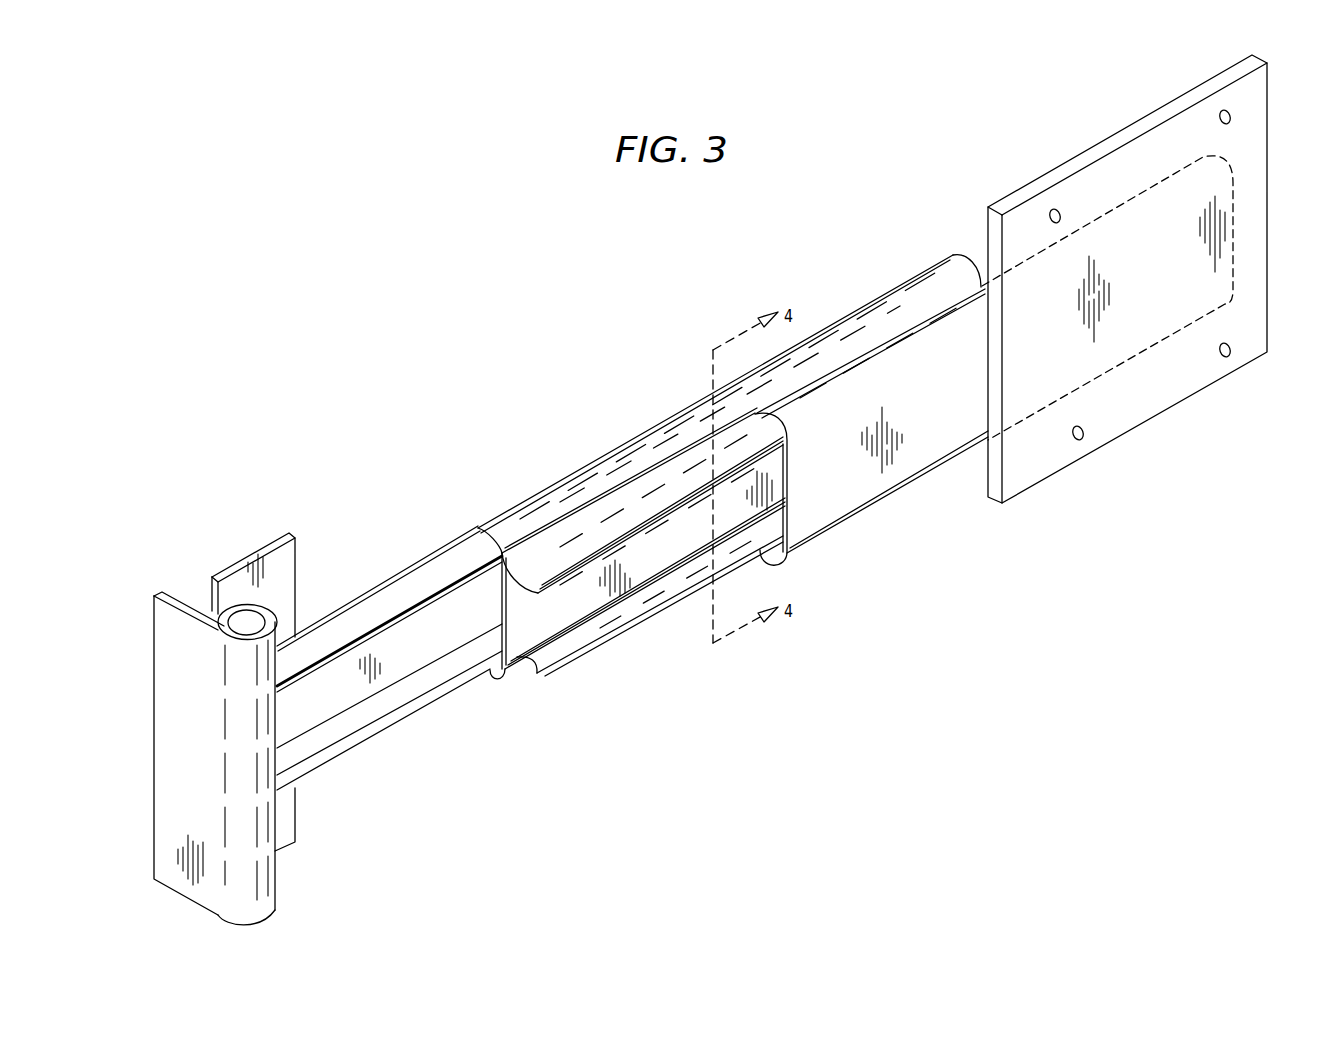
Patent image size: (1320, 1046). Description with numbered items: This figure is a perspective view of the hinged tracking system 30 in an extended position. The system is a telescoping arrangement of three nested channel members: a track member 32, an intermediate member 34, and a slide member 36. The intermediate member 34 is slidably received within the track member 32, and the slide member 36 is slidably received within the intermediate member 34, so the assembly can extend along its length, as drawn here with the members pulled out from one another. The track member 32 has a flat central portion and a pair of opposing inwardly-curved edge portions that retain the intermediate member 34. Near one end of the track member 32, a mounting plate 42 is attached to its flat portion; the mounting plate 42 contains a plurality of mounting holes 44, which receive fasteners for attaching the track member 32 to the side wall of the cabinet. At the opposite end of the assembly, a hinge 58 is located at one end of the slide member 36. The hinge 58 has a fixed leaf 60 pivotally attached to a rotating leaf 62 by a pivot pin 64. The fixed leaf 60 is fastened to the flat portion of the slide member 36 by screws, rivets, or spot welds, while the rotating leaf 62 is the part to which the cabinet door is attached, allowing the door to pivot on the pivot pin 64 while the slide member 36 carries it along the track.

The hinged tracking system 30 is at (618, 388).
The track member 32 is at (892, 497).
The intermediate member 34 is at (542, 625).
The slide member 36 is at (433, 623).
The mounting plate 42 is at (1144, 279).
The mounting holes 44 is at (1231, 116).
The hinge 58 is at (276, 868).
The fixed leaf 60 is at (262, 547).
The rotating leaf 62 is at (176, 597).
The pivot pin 64 is at (247, 620).